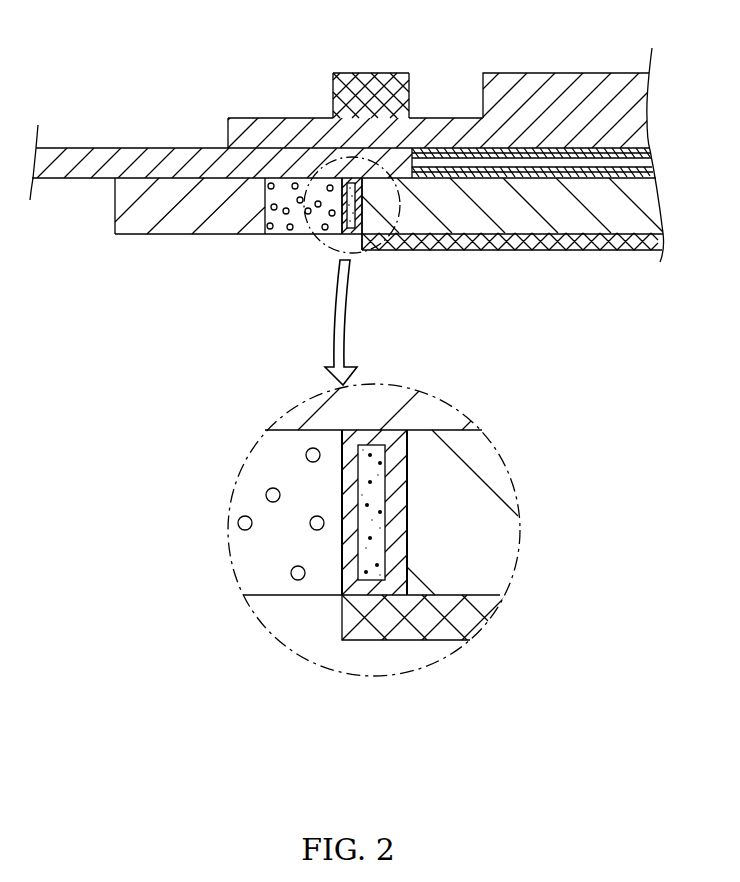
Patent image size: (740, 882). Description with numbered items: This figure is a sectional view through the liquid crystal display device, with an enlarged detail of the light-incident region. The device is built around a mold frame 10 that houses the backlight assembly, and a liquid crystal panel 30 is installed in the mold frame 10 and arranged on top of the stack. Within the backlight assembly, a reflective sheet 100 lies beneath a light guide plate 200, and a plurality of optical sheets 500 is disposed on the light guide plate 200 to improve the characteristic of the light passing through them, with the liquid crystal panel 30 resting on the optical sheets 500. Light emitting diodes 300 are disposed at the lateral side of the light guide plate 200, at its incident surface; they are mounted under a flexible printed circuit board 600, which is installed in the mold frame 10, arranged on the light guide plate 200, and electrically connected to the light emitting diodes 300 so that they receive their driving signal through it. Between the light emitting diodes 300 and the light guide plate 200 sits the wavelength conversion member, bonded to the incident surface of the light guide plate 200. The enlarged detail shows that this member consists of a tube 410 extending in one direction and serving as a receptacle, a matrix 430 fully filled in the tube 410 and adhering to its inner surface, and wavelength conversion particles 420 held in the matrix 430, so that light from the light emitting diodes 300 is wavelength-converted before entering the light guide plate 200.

The mold frame 10 is at (150, 220).
The liquid crystal panel 30 is at (562, 90).
The reflective sheet 100 is at (440, 240).
The light guide plate 200 is at (500, 220).
The light emitting diodes 300 is at (285, 228).
The tube 410 is at (395, 523).
The wavelength conversion particles 420 is at (382, 463).
The matrix 430 is at (370, 490).
The optical sheets 500 is at (565, 170).
The flexible printed circuit board 600 is at (158, 160).